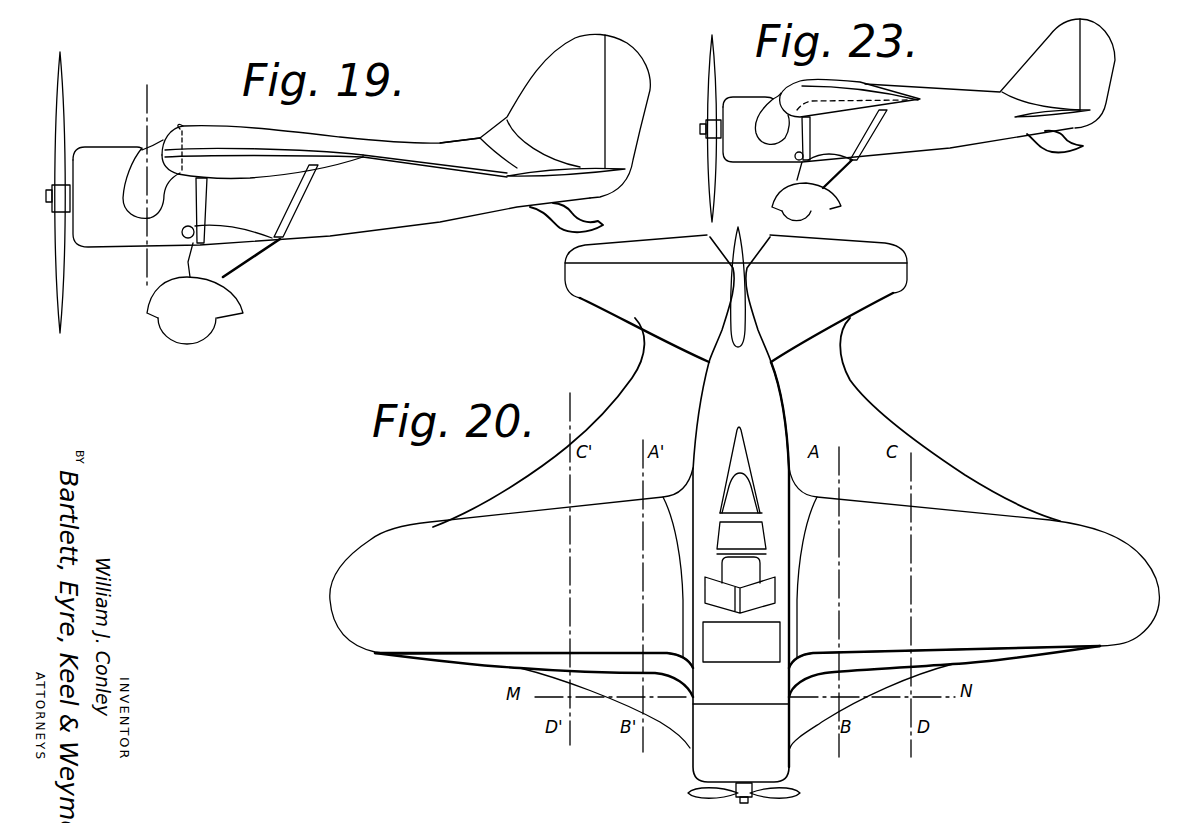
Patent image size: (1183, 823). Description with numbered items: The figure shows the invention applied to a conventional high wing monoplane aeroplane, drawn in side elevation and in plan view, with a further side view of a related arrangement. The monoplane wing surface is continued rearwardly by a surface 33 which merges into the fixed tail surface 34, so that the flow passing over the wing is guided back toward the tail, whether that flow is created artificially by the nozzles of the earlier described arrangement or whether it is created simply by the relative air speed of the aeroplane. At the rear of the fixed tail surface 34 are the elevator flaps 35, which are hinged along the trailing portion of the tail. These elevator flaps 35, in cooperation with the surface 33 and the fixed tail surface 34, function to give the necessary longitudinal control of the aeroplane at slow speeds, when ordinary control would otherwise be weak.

In FIG. 20, the surface 33 is at (623, 403).
In FIG. 20, the fixed tail surface 34 is at (883, 290).
In FIG. 23, the elevator flaps 35 is at (843, 86).
In FIG. 20, the elevator flaps 35 is at (883, 258).